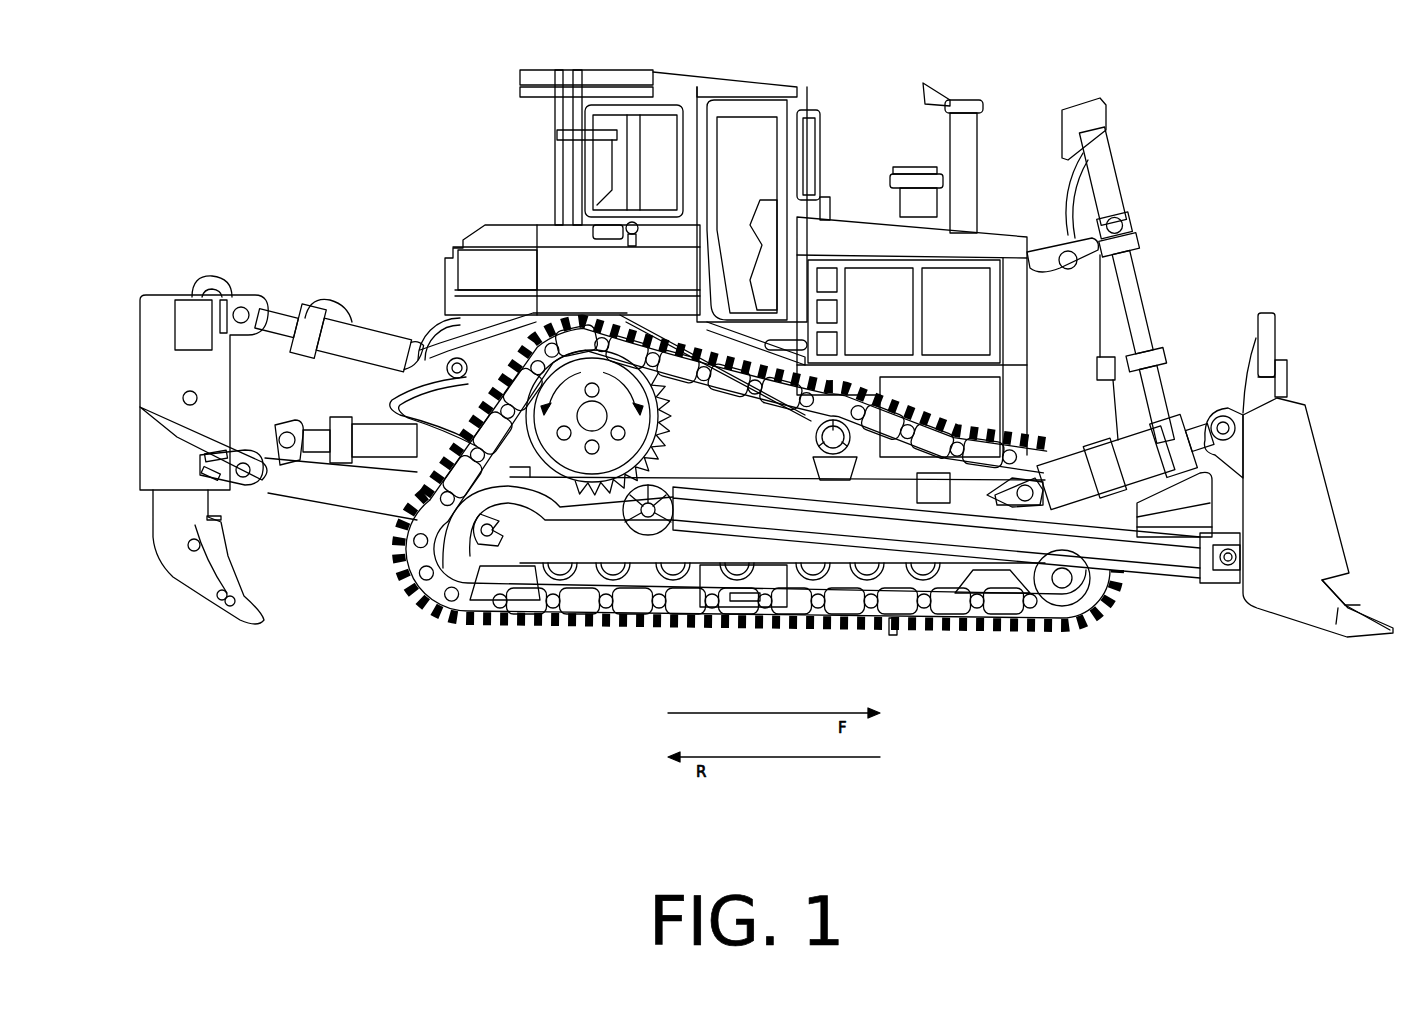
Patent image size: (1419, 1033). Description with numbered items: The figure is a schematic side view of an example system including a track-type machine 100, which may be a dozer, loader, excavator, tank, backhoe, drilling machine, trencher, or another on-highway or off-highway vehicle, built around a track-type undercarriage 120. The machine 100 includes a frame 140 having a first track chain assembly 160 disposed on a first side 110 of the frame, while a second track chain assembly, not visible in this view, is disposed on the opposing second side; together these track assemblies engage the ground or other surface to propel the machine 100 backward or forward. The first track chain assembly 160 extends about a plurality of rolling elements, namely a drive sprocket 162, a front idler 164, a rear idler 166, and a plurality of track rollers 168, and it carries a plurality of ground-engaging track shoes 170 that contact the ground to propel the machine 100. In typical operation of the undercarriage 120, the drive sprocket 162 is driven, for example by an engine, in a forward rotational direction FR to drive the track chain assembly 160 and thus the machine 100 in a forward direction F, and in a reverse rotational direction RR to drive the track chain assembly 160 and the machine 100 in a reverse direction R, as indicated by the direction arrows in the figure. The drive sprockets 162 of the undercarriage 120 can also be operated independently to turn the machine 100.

The track-type machine 100 is at (1248, 113).
The first side 110 is at (494, 268).
The track-type undercarriage 120 is at (1115, 618).
The frame 140 is at (1068, 346).
The first track chain assembly 160 is at (583, 642).
The drive sprocket 162 is at (553, 443).
The front idler 164 is at (1040, 575).
The rear idler 166 is at (467, 552).
The track rollers 168 is at (801, 605).
The ground-engaging track shoes 170 is at (893, 628).